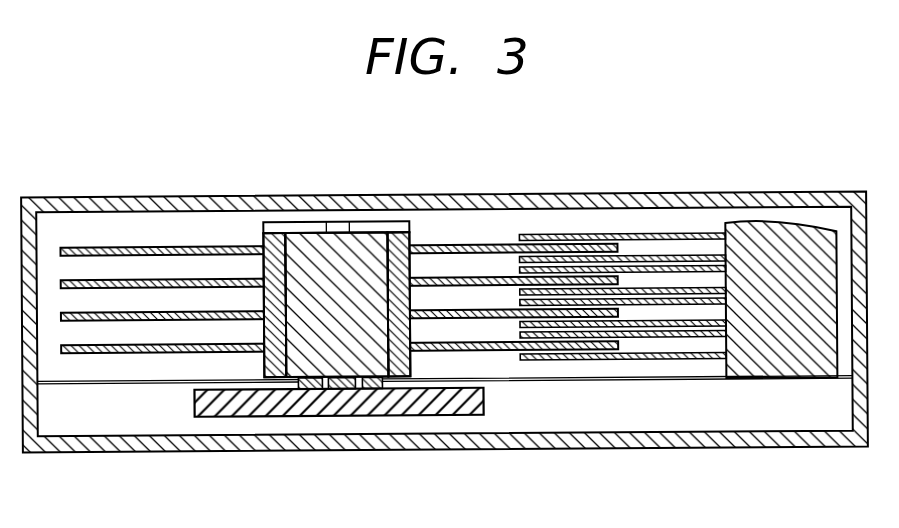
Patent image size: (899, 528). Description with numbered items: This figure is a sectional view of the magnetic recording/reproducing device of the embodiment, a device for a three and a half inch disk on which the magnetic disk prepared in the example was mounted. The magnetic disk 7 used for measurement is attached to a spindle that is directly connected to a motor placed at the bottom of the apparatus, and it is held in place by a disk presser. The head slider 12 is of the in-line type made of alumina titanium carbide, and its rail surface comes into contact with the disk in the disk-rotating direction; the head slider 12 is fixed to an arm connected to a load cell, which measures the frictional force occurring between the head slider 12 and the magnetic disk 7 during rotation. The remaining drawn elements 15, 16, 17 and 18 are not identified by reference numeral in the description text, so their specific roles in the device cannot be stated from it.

The magnetic disk 7 is at (102, 250).
The head slider 12 is at (545, 245).
The substrate plate 15 is at (285, 416).
The terminal pads 16 is at (377, 388).
The block member 17 is at (787, 246).
The lead strips 18 is at (655, 238).